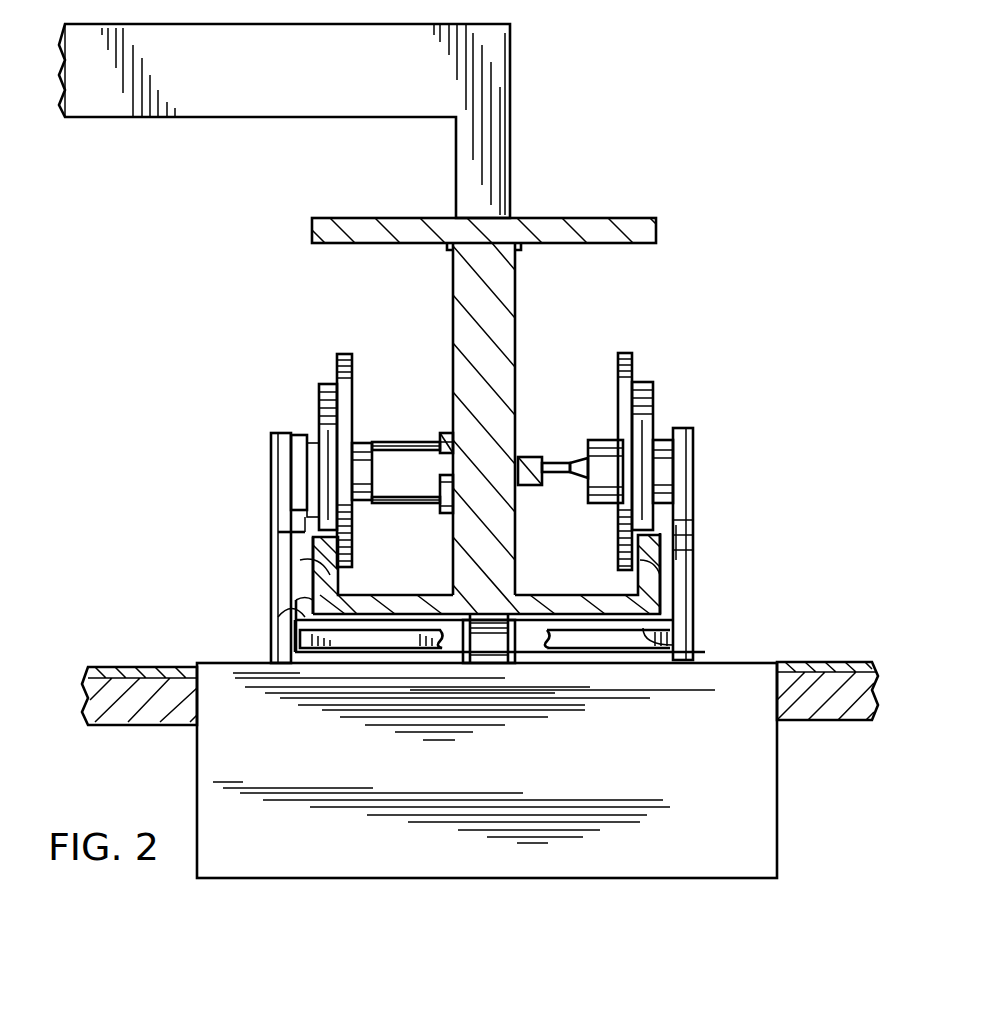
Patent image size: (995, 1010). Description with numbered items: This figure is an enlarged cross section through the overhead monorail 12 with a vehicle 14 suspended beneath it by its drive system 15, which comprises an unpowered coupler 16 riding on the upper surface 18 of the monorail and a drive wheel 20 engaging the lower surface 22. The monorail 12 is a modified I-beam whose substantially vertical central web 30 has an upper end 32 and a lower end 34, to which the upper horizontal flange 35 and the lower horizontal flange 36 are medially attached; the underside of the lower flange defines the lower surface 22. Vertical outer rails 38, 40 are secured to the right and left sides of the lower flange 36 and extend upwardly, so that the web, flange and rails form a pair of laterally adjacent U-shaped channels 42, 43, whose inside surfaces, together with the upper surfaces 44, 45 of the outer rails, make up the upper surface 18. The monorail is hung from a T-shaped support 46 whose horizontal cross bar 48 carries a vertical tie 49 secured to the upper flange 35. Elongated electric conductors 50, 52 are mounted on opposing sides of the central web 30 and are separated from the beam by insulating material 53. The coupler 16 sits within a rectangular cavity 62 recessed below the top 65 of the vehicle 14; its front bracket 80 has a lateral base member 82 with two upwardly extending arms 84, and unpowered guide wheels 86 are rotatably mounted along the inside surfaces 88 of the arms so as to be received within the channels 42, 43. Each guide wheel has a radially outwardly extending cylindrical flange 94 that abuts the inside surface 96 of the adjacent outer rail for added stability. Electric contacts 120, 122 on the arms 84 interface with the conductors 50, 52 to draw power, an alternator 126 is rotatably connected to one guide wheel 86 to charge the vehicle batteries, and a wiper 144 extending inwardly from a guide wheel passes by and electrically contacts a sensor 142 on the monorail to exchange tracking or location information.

The overhead monorail 12 is at (597, 208).
The vehicle 14 is at (105, 668).
The drive system 15 is at (755, 392).
The coupler 16 is at (325, 362).
The upper surface 18 is at (374, 597).
The drive wheel 20 is at (536, 660).
The lower surface 22 is at (613, 663).
The central web 30 is at (518, 290).
The upper end 32 is at (450, 250).
The lower end 34 is at (510, 600).
The upper horizontal flange 35 is at (657, 232).
The lower horizontal flange 36 is at (698, 645).
The outer rail 38 is at (660, 578).
The outer rail 40 is at (310, 585).
The U-shaped channel 42 is at (446, 560).
The U-shaped channel 43 is at (650, 495).
The upper surface of outer rail 44 is at (655, 535).
The upper surface of outer rail 45 is at (315, 536).
The T-shaped support 46 is at (182, 145).
The horizontal cross bar 48 is at (380, 72).
The vertical tie 49 is at (463, 170).
The electric conductor 50 is at (440, 440).
The electric conductor 52 is at (546, 463).
The insulating material 53 is at (446, 433).
The rectangular cavity 62 is at (197, 794).
The top of vehicle 65 is at (800, 660).
The front bracket 80 is at (268, 573).
The lateral base member 82 is at (363, 663).
The arm 84 is at (270, 440).
The guide wheel 86 is at (348, 356).
The inside surface 88 is at (278, 617).
The cylindrical flange 94 is at (345, 398).
The inside surface of outer rail 96 is at (337, 585).
The electric contact 120 is at (372, 450).
The electric contact 122 is at (578, 460).
The alternator 126 is at (300, 435).
The sensor 142 is at (453, 520).
The wiper 144 is at (395, 525).